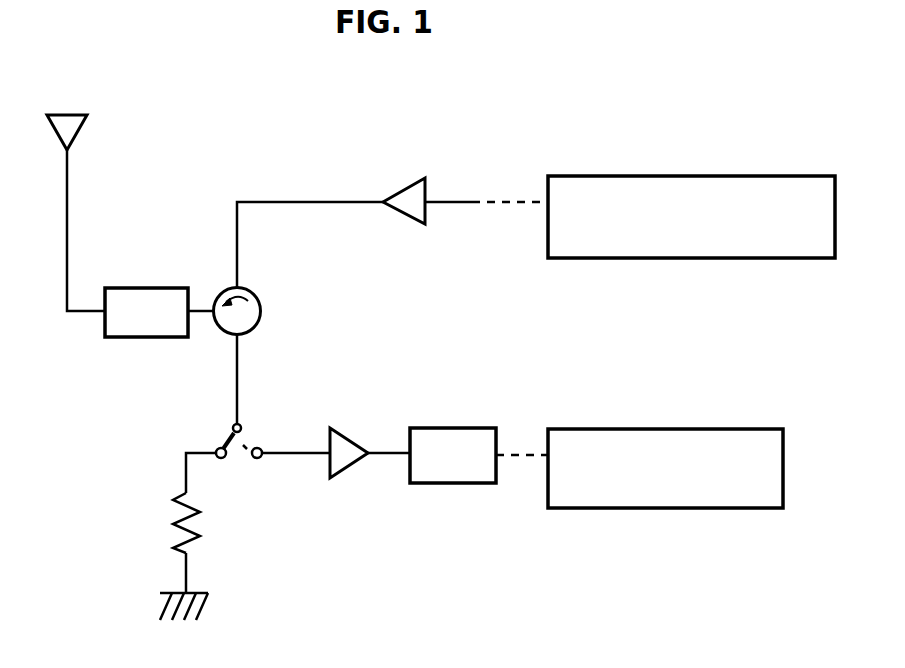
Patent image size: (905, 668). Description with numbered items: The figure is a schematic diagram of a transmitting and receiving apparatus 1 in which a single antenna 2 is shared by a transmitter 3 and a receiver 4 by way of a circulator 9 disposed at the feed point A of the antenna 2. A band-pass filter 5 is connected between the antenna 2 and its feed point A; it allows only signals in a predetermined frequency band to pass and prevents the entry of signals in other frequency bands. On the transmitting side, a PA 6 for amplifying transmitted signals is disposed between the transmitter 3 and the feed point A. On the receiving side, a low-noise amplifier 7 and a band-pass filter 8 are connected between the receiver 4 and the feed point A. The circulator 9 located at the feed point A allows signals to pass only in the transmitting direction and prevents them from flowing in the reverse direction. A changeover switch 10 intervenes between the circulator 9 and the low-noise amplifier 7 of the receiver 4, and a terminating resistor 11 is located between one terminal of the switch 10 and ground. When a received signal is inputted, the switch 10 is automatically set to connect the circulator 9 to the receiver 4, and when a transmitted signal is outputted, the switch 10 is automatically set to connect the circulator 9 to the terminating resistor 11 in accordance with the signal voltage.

The transmitting and receiving apparatus 1 is at (241, 135).
The antenna 2 is at (67, 175).
The transmitter 3 is at (598, 166).
The receiver 4 is at (611, 423).
The band-pass filter 5 is at (137, 338).
The PA 6 is at (403, 188).
The low-noise amplifier (LNA) 7 is at (347, 470).
The band-pass filter 8 is at (457, 483).
The circulator 9 is at (260, 307).
The changeover switch 10 is at (228, 438).
The terminating resistor 11 is at (173, 524).
The feed point A is at (223, 282).